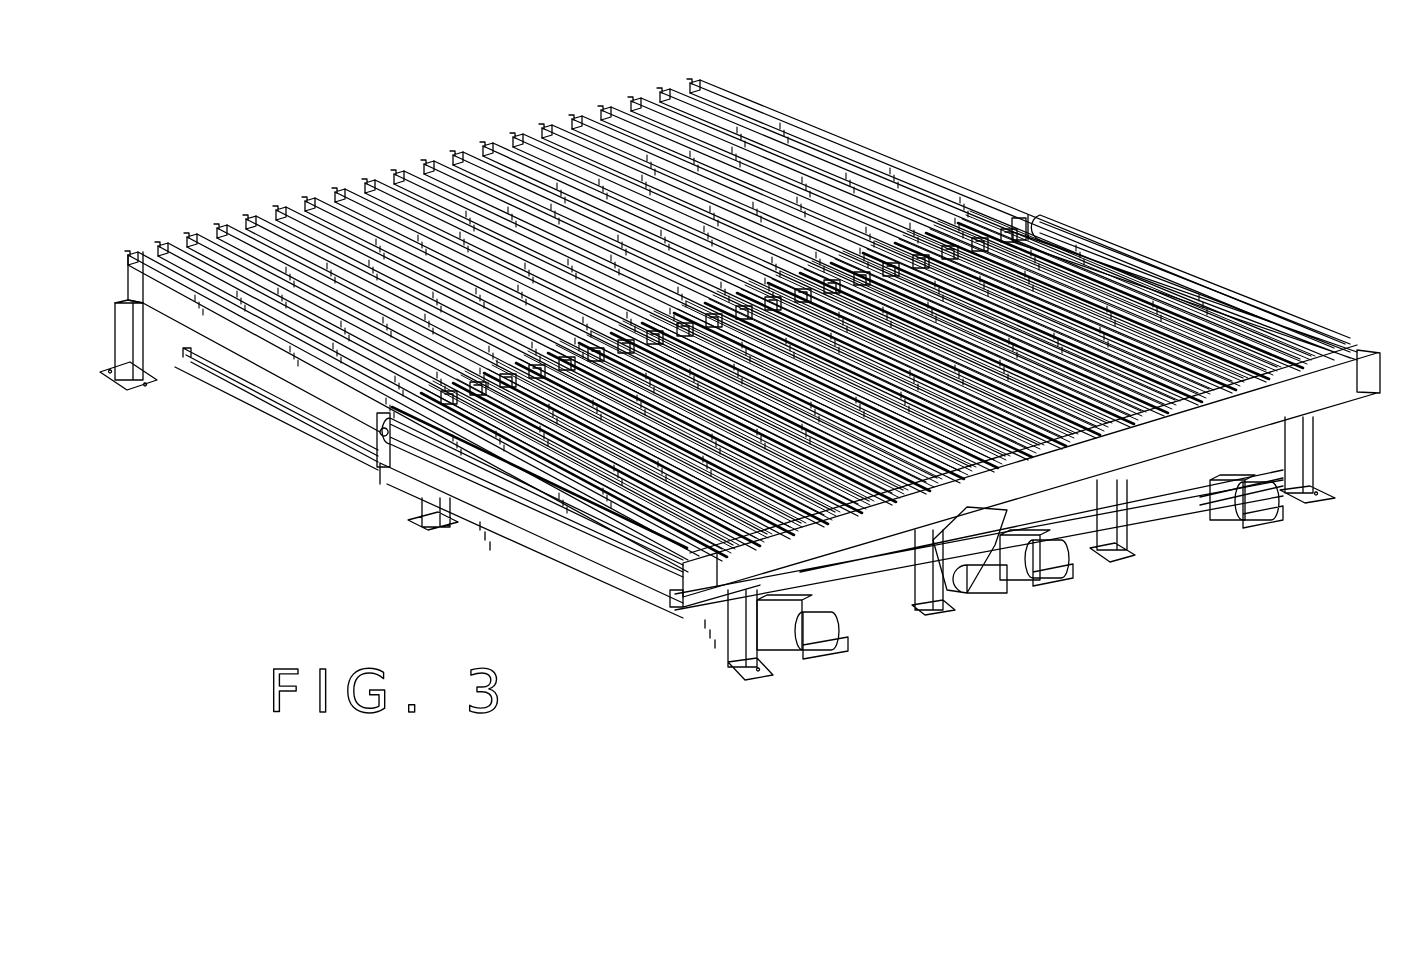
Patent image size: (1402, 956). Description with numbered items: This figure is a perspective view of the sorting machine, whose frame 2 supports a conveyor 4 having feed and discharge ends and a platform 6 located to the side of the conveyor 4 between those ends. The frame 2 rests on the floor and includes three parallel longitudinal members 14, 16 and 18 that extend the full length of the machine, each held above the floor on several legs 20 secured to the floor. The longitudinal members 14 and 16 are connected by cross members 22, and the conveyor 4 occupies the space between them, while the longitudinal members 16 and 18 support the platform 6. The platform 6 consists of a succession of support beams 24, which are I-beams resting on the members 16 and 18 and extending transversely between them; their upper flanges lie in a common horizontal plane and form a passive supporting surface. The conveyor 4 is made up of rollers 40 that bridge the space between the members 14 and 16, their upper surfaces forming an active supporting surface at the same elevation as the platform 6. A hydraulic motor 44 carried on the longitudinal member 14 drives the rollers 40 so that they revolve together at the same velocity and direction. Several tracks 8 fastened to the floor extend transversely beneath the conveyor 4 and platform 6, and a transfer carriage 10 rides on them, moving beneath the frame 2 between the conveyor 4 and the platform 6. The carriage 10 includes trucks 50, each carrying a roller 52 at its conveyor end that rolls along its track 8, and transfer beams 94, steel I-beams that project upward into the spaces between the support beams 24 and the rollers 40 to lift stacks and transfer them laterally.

The frame 2 is at (1336, 408).
The conveyor 4 is at (1110, 213).
The platform 6 is at (908, 149).
The tracks 8 is at (243, 393).
The transfer carriage 10 is at (1307, 525).
The longitudinal member 14 is at (672, 592).
The longitudinal member 16 is at (378, 462).
The longitudinal member 18 is at (122, 302).
The legs 20 is at (133, 355).
The cross members 22 is at (568, 545).
The support beams 24 is at (774, 123).
The rollers 40 is at (1160, 350).
The hydraulic motor 44 is at (1010, 590).
The trucks 50 is at (847, 623).
The roller 52 is at (843, 637).
The transfer beams 94 is at (1005, 233).